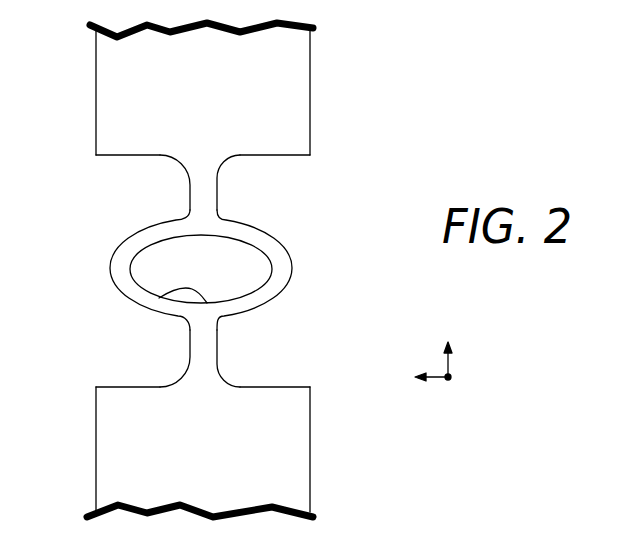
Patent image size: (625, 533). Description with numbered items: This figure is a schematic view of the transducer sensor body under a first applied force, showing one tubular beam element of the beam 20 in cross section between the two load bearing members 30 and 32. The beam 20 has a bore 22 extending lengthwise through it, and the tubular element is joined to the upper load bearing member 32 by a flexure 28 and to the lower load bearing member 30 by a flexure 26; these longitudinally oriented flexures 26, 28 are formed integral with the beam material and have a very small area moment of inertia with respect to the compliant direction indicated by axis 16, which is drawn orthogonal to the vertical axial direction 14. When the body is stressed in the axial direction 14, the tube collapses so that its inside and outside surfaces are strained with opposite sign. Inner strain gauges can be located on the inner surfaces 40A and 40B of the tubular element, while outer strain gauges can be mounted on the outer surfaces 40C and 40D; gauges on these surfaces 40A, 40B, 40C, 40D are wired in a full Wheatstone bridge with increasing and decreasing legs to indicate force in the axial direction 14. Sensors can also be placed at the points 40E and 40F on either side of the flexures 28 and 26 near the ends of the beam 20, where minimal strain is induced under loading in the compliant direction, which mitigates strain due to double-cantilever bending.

The axial force 14 is at (450, 363).
The translational axis 16 is at (433, 382).
The beam 20 is at (282, 240).
The bore 22 is at (167, 294).
The flexure 26 is at (210, 358).
The flexure 28 is at (203, 185).
The load bearing member 30 is at (310, 388).
The load bearing member 32 is at (310, 95).
The inner surface 40A is at (133, 270).
The inner surface 40B is at (270, 269).
The outer surface 40C is at (108, 268).
The outer surface 40D is at (293, 268).
The sensor placement point 40E is at (190, 189).
The sensor placement point 40F is at (192, 350).